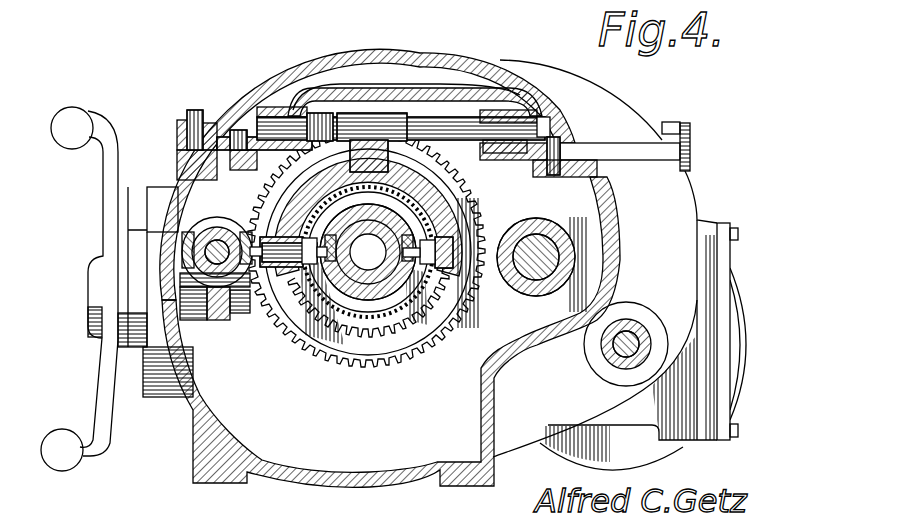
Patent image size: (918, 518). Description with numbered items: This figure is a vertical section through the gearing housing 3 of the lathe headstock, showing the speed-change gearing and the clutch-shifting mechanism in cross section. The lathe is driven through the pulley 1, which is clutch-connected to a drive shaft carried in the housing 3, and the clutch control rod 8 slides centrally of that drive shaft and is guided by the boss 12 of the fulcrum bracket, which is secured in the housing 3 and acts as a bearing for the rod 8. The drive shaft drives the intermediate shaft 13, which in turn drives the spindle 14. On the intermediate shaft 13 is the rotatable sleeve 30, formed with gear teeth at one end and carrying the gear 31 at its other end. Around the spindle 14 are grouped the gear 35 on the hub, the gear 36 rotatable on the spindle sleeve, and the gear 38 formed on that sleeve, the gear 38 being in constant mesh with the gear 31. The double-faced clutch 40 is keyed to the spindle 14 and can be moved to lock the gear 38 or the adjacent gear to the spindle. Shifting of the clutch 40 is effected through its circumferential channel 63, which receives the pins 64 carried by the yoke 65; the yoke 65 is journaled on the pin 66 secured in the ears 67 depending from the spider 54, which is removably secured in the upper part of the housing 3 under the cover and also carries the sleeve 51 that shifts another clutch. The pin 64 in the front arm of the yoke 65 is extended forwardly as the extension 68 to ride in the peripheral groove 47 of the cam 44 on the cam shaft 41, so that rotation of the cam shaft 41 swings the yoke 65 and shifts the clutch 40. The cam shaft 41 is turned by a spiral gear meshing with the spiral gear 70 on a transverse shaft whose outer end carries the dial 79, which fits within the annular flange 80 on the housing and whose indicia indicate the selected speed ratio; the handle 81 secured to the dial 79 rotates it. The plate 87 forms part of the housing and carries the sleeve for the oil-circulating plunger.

The pulley 1 is at (752, 366).
The gearing housing 3 is at (350, 482).
The clutch control rod 8 is at (648, 352).
The boss 12 is at (632, 326).
The intermediate shaft 13 is at (552, 252).
The spindle 14 is at (368, 252).
The sleeve 30 is at (536, 232).
The gear 31 is at (490, 350).
The gear 35 is at (297, 333).
The gear 36 is at (330, 307).
The gear 38 is at (377, 318).
The double-faced clutch 40 is at (360, 302).
The cam shaft 41 is at (205, 230).
The cam 44 is at (222, 240).
The peripheral groove 47 is at (203, 279).
The sleeve 51 is at (470, 120).
The spider 54 is at (374, 92).
The circumferential channel 63 is at (407, 312).
The pins 64 is at (447, 268).
The yoke 65 is at (449, 232).
The pin 66 is at (403, 130).
The ears 67 is at (437, 90).
The forward extension of pin 68 is at (251, 290).
The spiral gear 70 is at (229, 320).
The dial 79 is at (137, 350).
The annular flange 80 is at (157, 190).
The handle 81 is at (62, 440).
The plate 87 is at (731, 250).